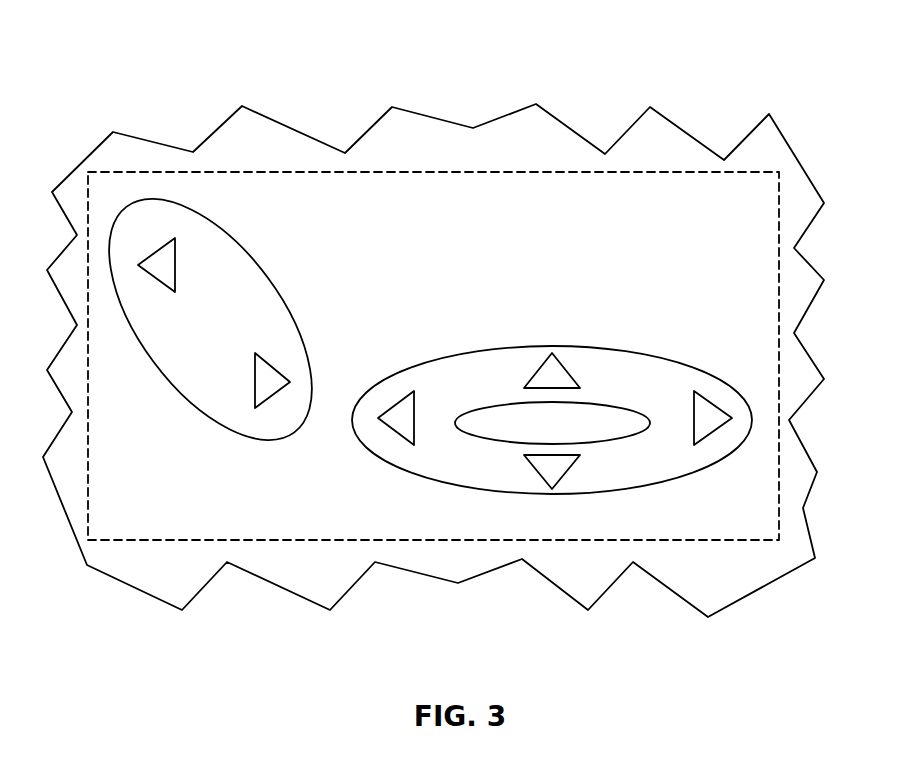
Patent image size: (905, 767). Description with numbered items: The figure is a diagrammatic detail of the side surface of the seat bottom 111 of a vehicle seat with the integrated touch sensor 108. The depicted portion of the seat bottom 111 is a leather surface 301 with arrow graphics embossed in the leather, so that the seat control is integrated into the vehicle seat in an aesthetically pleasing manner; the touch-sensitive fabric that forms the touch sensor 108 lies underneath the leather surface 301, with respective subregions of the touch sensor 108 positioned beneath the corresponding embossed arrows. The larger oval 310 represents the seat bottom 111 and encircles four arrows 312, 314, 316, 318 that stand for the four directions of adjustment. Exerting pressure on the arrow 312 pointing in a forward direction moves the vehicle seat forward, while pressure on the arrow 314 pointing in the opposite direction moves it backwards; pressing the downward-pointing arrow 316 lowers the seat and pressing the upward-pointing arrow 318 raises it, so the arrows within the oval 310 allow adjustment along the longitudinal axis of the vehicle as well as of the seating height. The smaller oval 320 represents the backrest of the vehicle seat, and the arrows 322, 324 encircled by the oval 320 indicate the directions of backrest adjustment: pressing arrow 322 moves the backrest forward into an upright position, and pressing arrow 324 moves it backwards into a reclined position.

The leather surface 301 is at (155, 582).
The touch sensor 108 is at (588, 203).
The seat bottom 111 is at (612, 109).
The oval 320 is at (221, 291).
The arrow 324 is at (163, 257).
The arrow 322 is at (267, 378).
The oval 310 is at (455, 459).
The arrow 314 is at (403, 422).
The arrow 312 is at (708, 422).
The arrow 318 is at (542, 380).
The arrow 316 is at (547, 468).